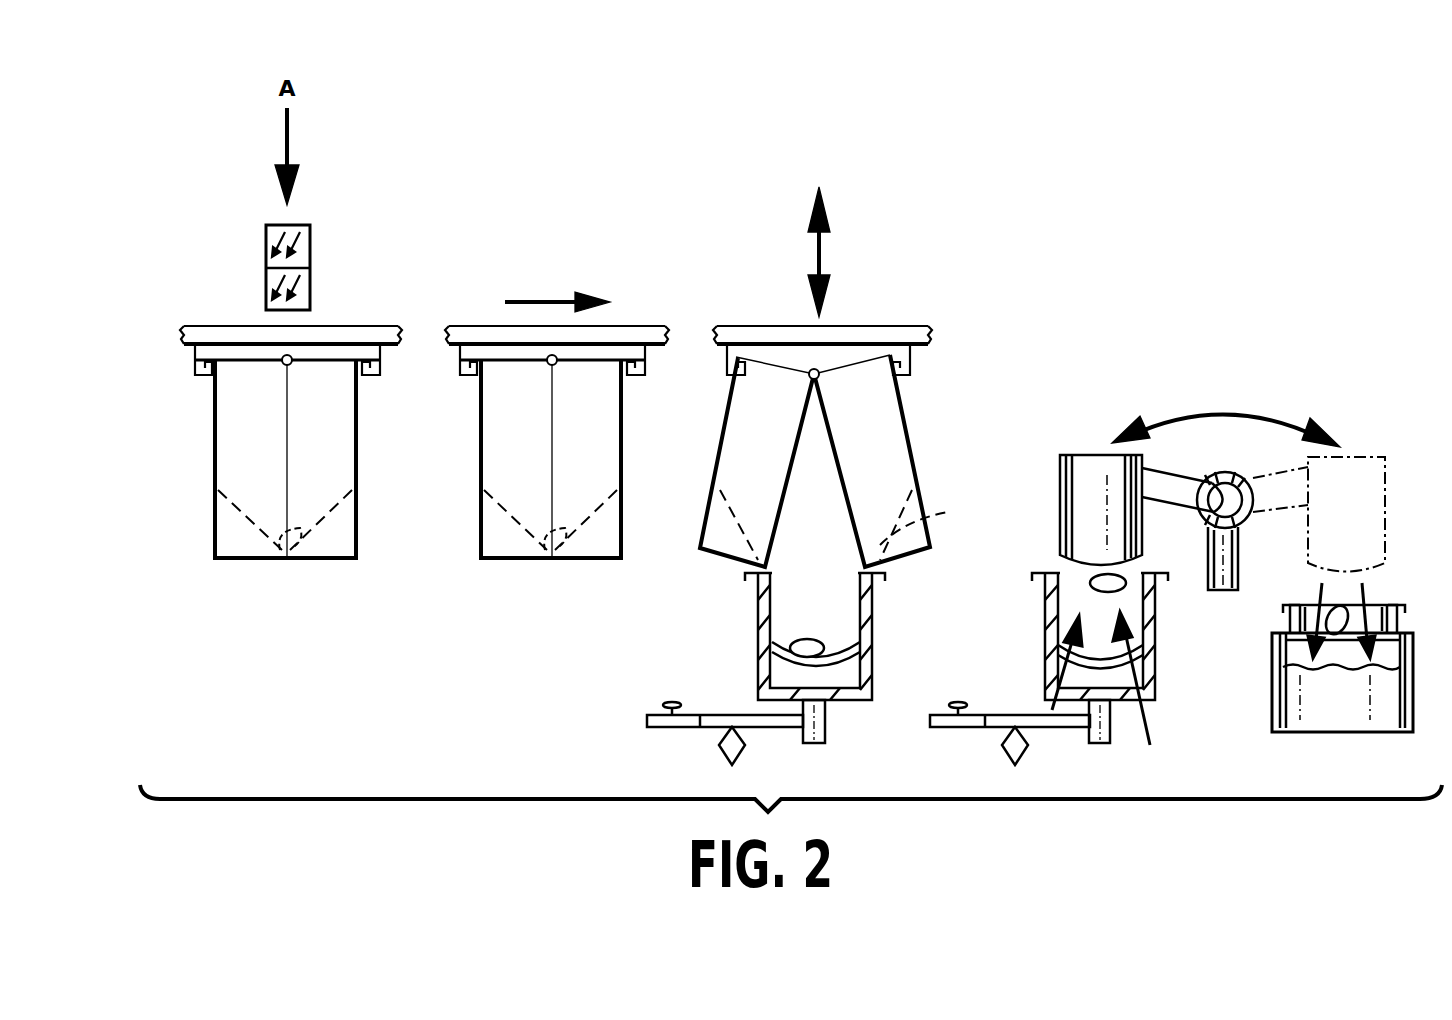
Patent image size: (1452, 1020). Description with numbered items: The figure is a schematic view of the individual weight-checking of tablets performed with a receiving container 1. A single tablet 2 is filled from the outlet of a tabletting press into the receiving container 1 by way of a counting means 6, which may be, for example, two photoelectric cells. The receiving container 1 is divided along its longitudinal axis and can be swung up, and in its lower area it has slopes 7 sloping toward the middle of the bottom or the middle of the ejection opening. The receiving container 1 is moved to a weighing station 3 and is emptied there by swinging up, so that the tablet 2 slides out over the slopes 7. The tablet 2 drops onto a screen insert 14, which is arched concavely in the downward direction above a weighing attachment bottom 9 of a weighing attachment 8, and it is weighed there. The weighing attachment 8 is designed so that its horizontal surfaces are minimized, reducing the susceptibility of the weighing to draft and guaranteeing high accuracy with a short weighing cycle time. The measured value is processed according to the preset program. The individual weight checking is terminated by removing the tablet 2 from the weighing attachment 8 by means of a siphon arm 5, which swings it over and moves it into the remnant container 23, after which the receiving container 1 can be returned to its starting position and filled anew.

The receiving container 1 is at (233, 428).
The tablet 2 is at (812, 640).
The weighing station 3 is at (728, 722).
The siphon arm 5 is at (1085, 468).
The counting means 6 is at (312, 281).
The slopes 7 is at (929, 522).
The weighing attachment 8 is at (780, 608).
The weighing attachment bottom 9 is at (845, 703).
The screen insert 14 is at (775, 676).
The remnant container 23 is at (1310, 732).